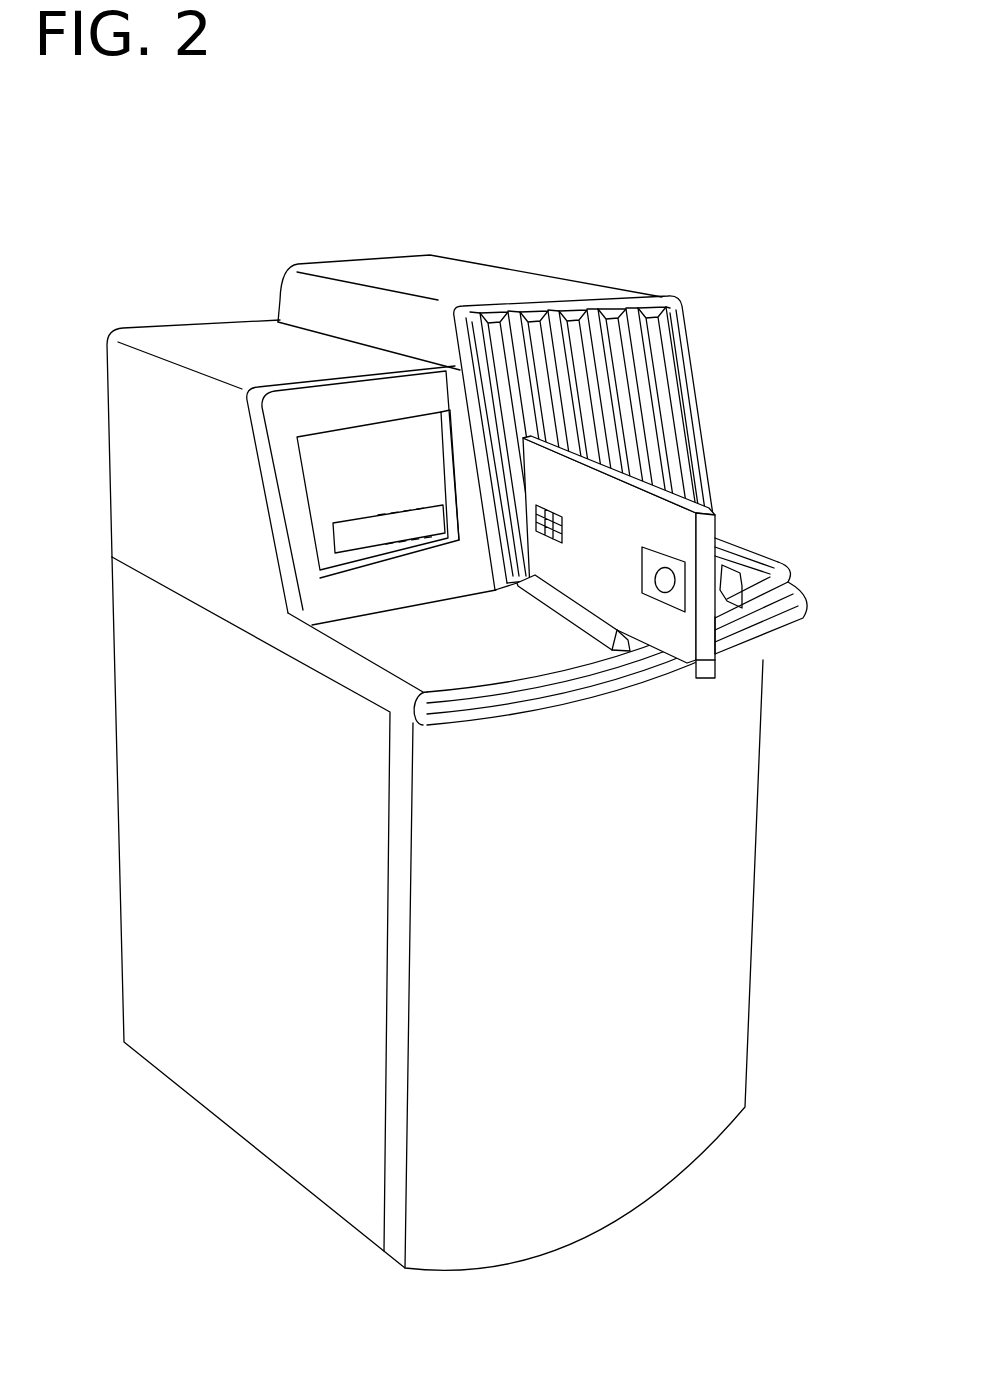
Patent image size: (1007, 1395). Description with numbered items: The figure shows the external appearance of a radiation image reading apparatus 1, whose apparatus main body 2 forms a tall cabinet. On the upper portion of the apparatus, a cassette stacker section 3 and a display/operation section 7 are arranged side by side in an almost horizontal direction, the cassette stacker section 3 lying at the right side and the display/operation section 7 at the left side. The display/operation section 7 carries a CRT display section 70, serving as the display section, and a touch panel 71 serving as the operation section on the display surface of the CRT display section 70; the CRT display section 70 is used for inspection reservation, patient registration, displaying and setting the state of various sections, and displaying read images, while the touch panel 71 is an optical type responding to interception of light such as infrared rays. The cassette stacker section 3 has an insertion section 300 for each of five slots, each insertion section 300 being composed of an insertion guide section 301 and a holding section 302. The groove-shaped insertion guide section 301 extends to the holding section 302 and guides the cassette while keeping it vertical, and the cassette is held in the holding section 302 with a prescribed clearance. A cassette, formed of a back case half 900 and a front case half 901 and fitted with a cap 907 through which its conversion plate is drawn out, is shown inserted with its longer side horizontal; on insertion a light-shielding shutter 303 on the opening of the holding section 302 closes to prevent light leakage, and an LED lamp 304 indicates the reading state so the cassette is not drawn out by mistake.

The radiation image reading apparatus 1 is at (416, 162).
The apparatus main body 2 is at (727, 921).
The cassette stacker section 3 is at (653, 396).
The display/operation section 7 is at (311, 505).
The CRT display section 70 is at (320, 453).
The touch panel 71 is at (395, 507).
The insertion section 300 is at (719, 414).
The insertion guide section 301 is at (757, 583).
The holding section 302 is at (670, 468).
The light-shielding shutter 303 is at (653, 325).
The LED lamp 304 is at (495, 312).
The case half 900 is at (687, 648).
The case half 901 is at (718, 618).
The cap 907 is at (657, 652).